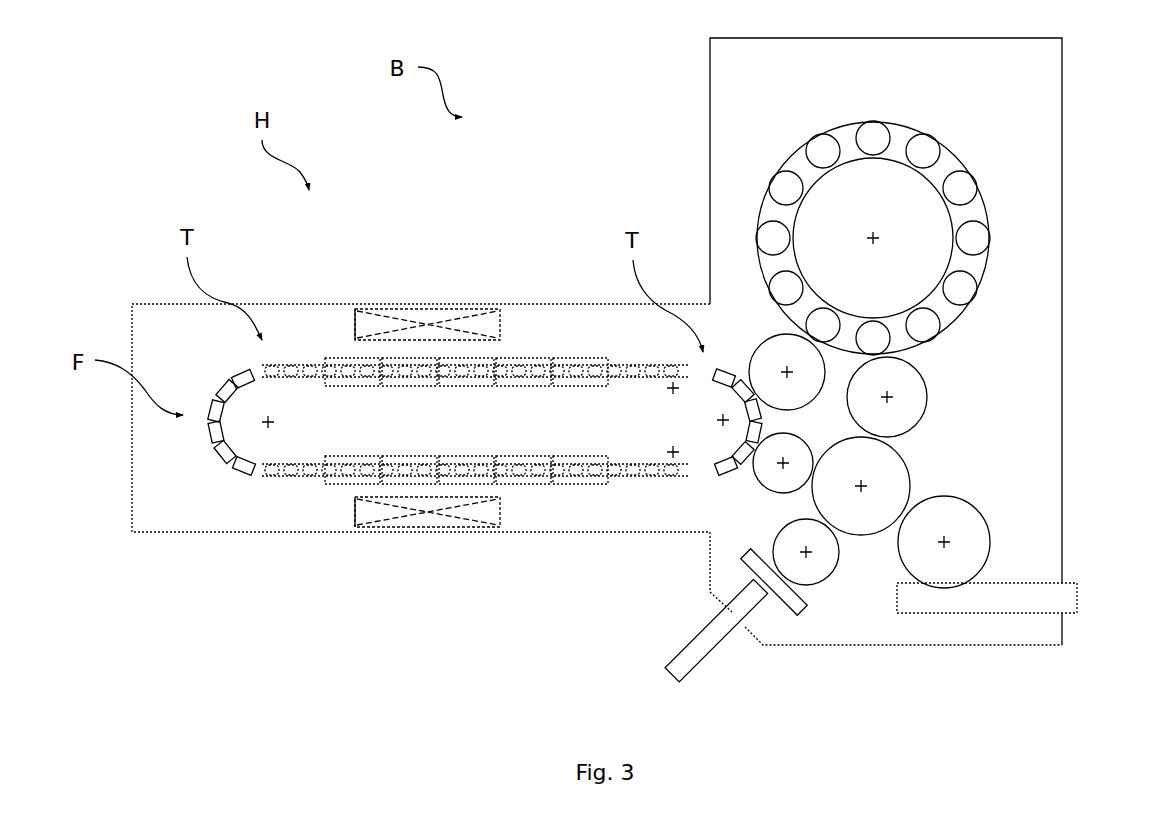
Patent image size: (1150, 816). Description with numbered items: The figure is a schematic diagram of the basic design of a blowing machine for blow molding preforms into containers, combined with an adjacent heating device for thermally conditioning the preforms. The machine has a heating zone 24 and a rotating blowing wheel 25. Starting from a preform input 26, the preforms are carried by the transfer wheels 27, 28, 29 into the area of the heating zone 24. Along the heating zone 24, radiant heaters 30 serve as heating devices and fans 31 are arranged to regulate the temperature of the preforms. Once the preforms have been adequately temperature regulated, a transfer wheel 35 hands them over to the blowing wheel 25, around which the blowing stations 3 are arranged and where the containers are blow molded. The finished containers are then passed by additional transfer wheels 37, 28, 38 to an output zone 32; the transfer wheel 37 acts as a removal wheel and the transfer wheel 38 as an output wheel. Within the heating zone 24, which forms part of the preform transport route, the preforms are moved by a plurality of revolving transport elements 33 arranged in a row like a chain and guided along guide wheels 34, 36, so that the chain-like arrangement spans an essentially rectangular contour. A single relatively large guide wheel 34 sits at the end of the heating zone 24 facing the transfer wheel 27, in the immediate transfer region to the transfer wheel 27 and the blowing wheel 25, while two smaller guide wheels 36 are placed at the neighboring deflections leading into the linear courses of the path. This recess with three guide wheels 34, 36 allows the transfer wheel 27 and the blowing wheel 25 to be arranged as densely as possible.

The blowing station 3 is at (933, 148).
The heating zone 24 is at (340, 336).
The blowing wheel 25 is at (985, 212).
The preform input 26 is at (700, 657).
The transfer wheel 27 is at (817, 580).
The transfer wheel 28 is at (865, 523).
The transfer wheel 29 is at (803, 462).
The radiant heater 30 is at (540, 358).
The fan 31 is at (428, 309).
The output zone 32 is at (993, 607).
The transport element 33 is at (305, 472).
The guide wheel 34 is at (268, 422).
The transfer wheel 35 is at (772, 340).
The guide wheel 36 is at (673, 388).
The transfer wheel 37 is at (925, 397).
The transfer wheel 38 is at (983, 540).